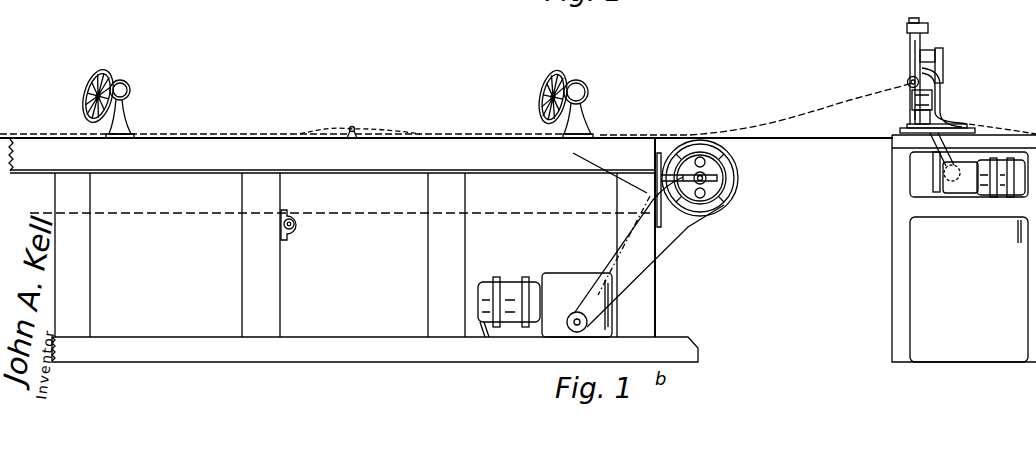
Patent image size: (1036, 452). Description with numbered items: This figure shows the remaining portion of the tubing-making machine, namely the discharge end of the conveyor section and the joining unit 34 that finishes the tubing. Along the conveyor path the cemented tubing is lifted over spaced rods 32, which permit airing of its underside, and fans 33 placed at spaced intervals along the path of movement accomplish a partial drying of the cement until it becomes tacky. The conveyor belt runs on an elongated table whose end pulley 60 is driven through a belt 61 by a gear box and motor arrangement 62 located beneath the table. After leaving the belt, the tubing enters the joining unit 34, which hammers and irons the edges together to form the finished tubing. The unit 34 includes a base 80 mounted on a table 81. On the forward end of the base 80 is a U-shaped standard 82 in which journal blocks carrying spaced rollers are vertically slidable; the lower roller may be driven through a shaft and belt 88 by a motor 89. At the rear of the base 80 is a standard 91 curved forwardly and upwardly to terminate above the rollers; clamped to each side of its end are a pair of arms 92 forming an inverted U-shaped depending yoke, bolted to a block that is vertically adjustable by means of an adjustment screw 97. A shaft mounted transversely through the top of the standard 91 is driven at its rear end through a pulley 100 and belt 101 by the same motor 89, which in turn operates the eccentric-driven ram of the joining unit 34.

The fans 33 is at (101, 72).
The spaced rods 32 is at (354, 127).
The pulley 60 is at (738, 167).
The belt 61 is at (676, 243).
The gear box and motor arrangement 62 is at (555, 273).
The joining unit 34 is at (957, 67).
The adjustment screw 97 is at (911, 20).
The pulley 100 is at (939, 49).
The arms 92 is at (910, 65).
The standard 91 is at (940, 97).
The U-shaped standard 82 is at (915, 108).
The base 80 is at (905, 131).
The belt 88 is at (930, 162).
The belt 101 is at (934, 178).
The motor 89 is at (957, 188).
The table 81 is at (893, 288).